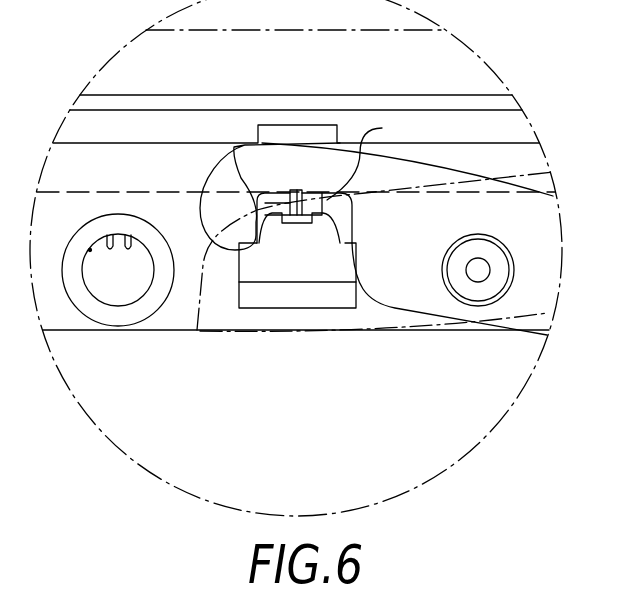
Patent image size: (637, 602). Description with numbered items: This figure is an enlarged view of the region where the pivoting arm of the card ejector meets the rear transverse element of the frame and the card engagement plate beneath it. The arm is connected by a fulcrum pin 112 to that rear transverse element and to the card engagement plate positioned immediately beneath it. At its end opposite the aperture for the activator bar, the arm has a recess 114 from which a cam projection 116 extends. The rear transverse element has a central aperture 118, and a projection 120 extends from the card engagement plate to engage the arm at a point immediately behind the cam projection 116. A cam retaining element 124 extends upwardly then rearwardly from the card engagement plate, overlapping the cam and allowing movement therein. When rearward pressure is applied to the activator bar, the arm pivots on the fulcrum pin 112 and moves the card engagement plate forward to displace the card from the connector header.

The fulcrum pin 112 is at (470, 262).
The recess 114 is at (258, 226).
The cam projection 116 is at (226, 158).
The central aperture 118 is at (374, 157).
The projection 120 is at (307, 161).
The cam retaining element 124 is at (316, 233).